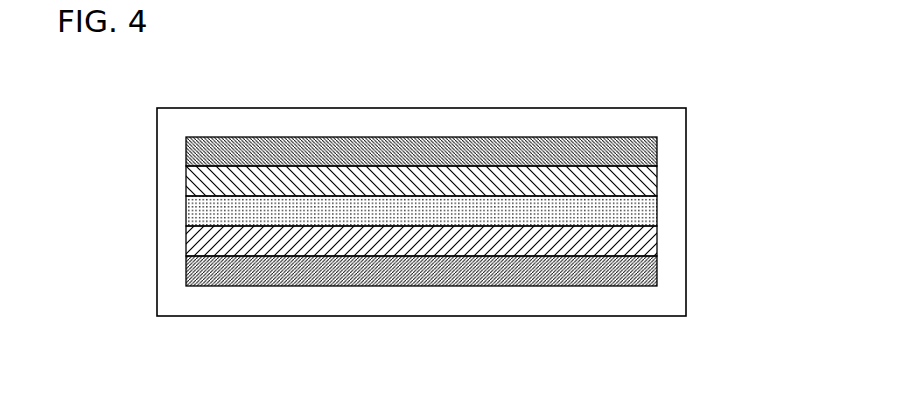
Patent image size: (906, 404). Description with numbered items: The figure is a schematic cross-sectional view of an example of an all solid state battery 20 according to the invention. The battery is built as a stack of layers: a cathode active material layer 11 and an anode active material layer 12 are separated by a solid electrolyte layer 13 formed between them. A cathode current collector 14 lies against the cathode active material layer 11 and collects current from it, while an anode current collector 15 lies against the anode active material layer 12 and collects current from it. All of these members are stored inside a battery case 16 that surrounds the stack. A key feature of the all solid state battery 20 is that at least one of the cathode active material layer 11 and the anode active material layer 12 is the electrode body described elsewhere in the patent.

The all solid state battery 20 is at (583, 75).
The battery case 16 is at (672, 118).
The cathode current collector 14 is at (645, 148).
The cathode active material layer 11 is at (645, 180).
The solid electrolyte layer 13 is at (645, 213).
The anode active material layer 12 is at (645, 239).
The anode current collector 15 is at (645, 267).